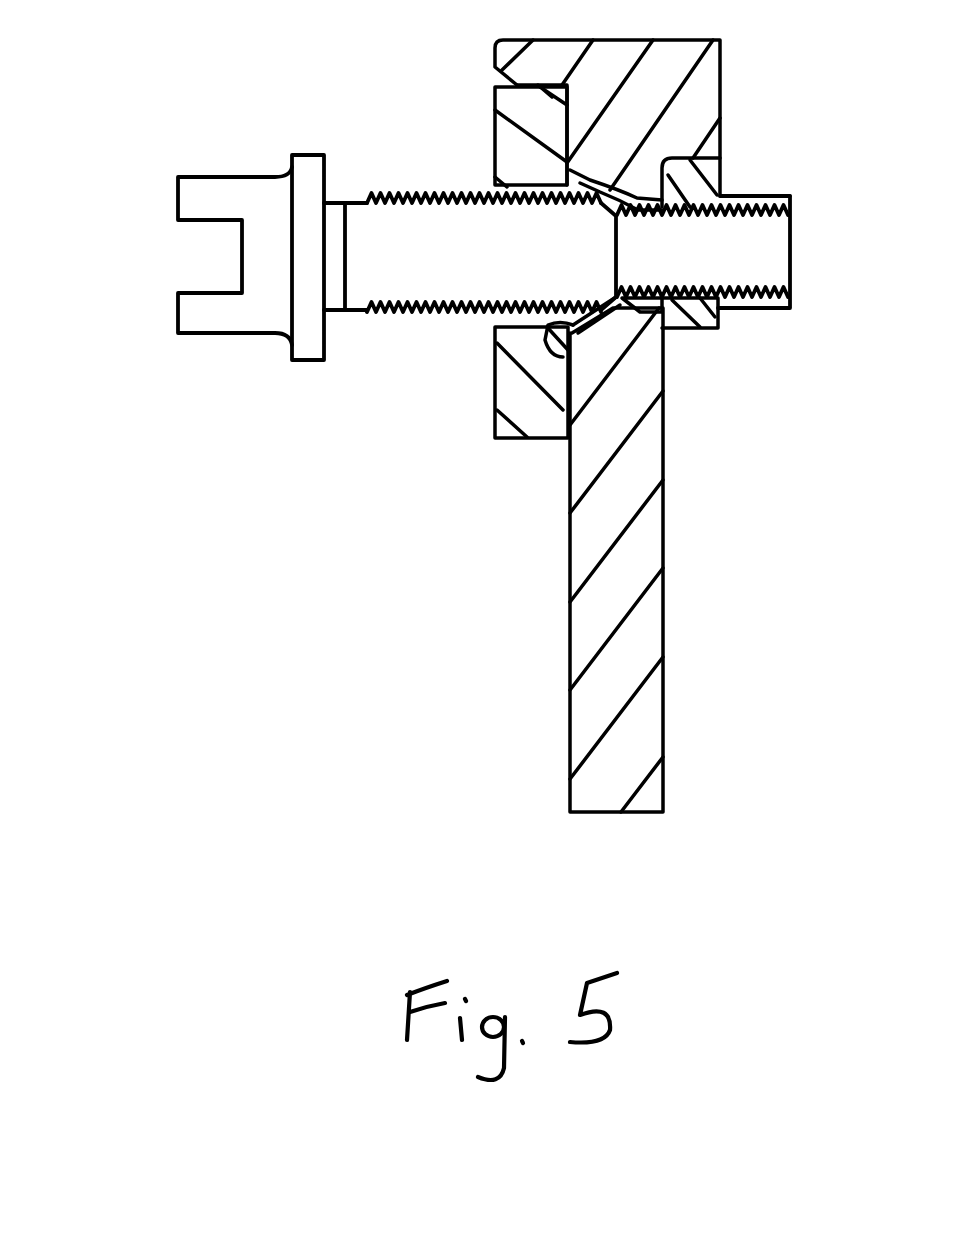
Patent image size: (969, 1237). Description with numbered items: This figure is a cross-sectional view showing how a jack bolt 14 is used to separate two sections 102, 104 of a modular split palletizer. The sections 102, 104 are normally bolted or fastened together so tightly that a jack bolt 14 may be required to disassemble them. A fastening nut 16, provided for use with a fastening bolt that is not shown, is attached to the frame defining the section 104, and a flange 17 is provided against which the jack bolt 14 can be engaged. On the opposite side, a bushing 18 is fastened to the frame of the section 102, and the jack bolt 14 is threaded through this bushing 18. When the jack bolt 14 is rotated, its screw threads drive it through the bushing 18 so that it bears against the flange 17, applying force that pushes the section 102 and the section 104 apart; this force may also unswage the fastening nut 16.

The jack bolt 14 is at (212, 187).
The fastening nut 16 is at (707, 330).
The flange 17 is at (613, 330).
The bushing 18 is at (527, 165).
The section 102 is at (505, 398).
The section 104 is at (635, 567).